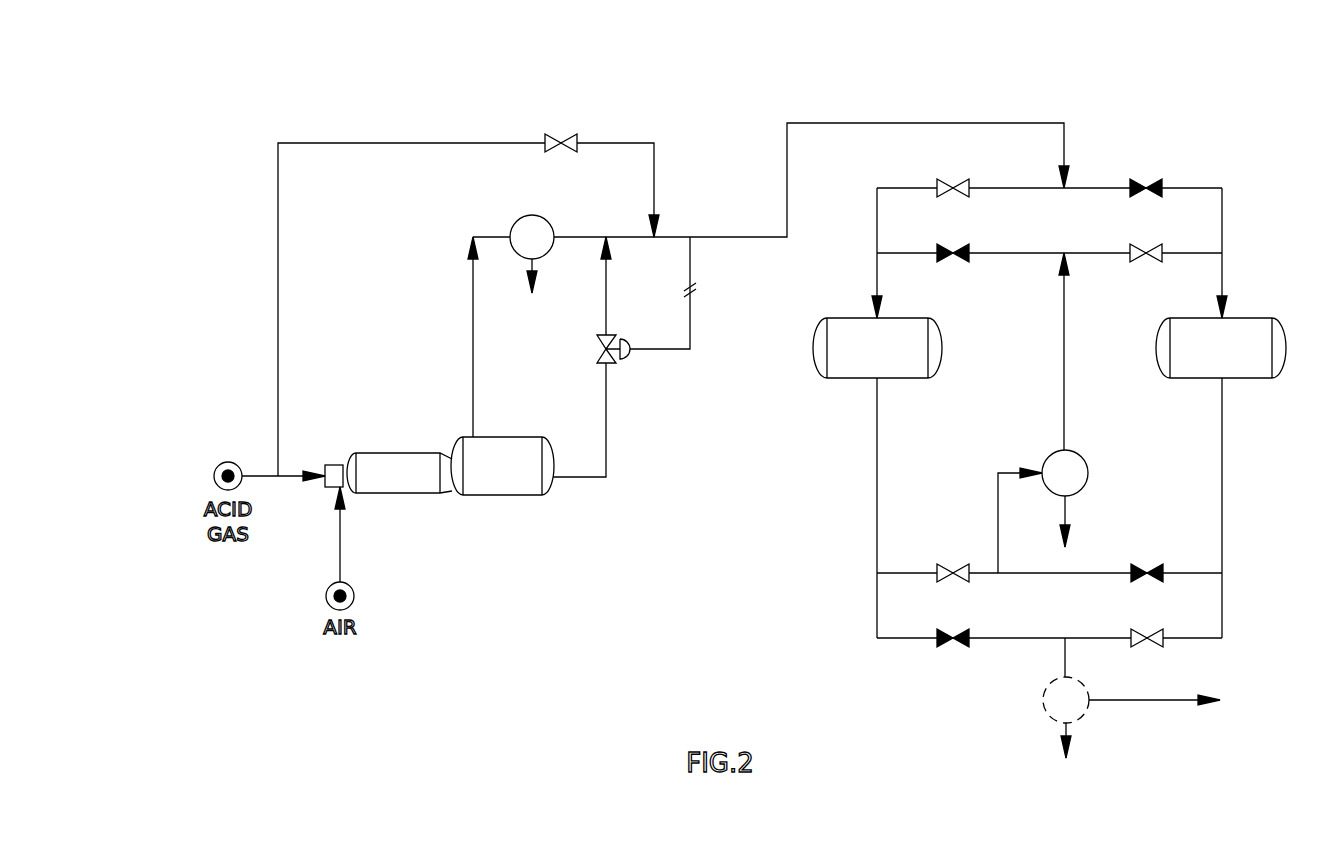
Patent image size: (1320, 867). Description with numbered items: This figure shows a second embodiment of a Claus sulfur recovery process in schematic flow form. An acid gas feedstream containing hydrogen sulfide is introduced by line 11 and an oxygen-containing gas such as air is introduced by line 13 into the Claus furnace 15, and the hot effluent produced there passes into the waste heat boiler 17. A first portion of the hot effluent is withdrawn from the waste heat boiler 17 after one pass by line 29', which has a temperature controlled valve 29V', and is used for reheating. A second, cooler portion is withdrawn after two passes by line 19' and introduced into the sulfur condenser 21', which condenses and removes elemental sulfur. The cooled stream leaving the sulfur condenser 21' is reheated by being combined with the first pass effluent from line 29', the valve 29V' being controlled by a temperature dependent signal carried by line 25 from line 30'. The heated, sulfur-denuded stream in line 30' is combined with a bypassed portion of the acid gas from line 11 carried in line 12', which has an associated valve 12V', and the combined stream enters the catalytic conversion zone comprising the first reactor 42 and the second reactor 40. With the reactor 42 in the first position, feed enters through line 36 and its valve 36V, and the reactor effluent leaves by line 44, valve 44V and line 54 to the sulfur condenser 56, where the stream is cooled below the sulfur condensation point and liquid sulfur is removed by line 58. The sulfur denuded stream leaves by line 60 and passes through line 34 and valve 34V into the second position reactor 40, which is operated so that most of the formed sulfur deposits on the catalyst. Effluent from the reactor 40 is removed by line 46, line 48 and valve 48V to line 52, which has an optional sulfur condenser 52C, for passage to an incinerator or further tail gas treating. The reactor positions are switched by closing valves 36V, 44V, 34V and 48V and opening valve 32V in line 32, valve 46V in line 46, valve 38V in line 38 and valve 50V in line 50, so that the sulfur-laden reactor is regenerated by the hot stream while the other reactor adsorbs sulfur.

The line 11 is at (268, 477).
The line 12' is at (468, 309).
The valve 12V' is at (541, 117).
The line 13 is at (337, 550).
The Claus furnace 15 is at (387, 497).
The waste heat boiler 17 is at (515, 497).
The line 19' is at (467, 337).
The sulfur condenser 21' is at (560, 250).
The line 25 is at (692, 336).
The line 29' is at (611, 357).
The temperature controlled valve 29V' is at (581, 357).
The line 30' is at (811, 180).
The line 32 is at (1085, 187).
The valve 32V is at (1153, 180).
The line 34 is at (1107, 252).
The valve 34V is at (1155, 265).
The line 36 is at (990, 187).
The valve 36V is at (948, 192).
The line 38 is at (988, 255).
The valve 38V is at (948, 247).
The reactor 40 is at (1245, 310).
The reactor 42 is at (942, 355).
The line 44 is at (878, 477).
The valve 44V is at (945, 563).
The line 46 is at (1223, 490).
The valve 46V is at (1156, 563).
The line 48 is at (1223, 612).
The valve 48V is at (1148, 630).
The line 50 is at (890, 637).
The valve 50V is at (957, 630).
The line 52 is at (1138, 697).
The sulfur condenser 52C is at (1042, 703).
The line 54 is at (998, 507).
The sulfur condenser 56 is at (1090, 473).
The line 58 is at (1067, 517).
The line 60 is at (1067, 377).